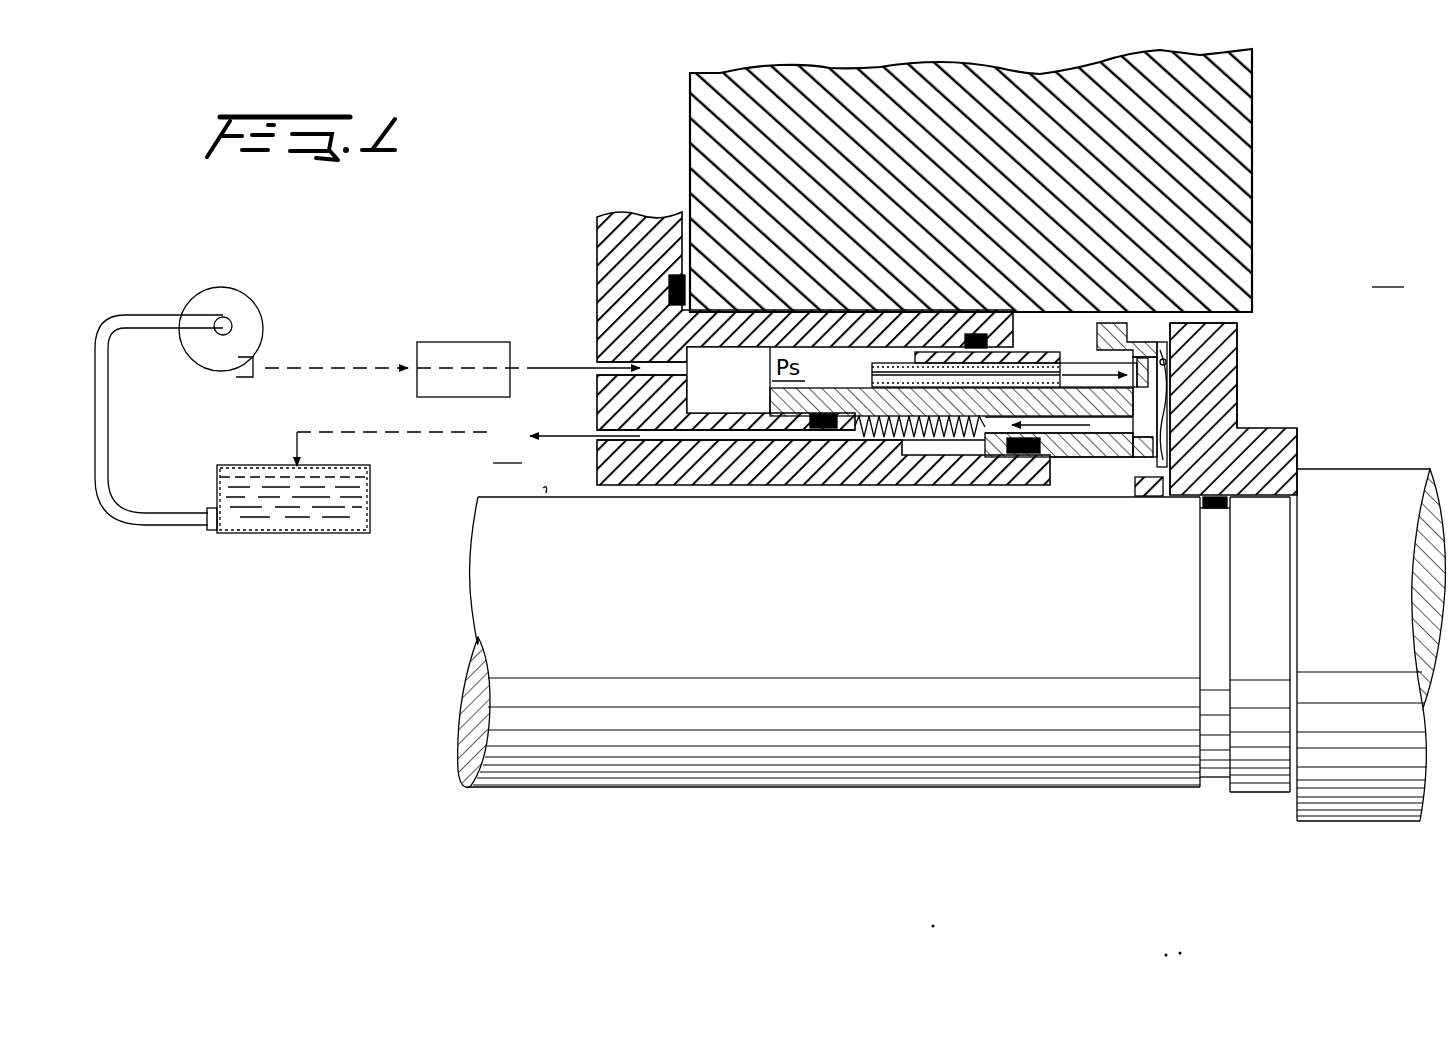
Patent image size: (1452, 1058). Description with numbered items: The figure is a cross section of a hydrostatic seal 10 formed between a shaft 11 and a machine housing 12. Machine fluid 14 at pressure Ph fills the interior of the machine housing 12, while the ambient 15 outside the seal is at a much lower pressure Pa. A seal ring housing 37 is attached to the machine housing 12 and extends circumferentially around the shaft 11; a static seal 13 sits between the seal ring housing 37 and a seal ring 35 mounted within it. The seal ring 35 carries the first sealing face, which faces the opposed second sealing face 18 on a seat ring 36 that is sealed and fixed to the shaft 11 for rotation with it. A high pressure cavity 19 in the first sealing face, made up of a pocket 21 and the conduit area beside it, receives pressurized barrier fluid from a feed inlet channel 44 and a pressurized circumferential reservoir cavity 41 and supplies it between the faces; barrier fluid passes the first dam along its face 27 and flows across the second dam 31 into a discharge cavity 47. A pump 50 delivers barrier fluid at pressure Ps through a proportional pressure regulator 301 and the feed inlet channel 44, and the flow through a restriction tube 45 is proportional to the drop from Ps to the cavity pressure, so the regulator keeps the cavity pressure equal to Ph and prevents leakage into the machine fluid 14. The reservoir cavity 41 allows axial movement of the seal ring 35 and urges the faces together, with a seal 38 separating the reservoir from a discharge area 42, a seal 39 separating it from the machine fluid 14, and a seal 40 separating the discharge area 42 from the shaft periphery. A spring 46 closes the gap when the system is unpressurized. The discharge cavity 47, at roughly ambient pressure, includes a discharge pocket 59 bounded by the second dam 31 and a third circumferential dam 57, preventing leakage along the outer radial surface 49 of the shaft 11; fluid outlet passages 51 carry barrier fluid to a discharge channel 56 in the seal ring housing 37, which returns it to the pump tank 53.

The hydrostatic seal 10 is at (612, 182).
The shaft 11 is at (700, 772).
The machine housing 12 is at (1235, 83).
The static seal 13 is at (669, 287).
The machine fluid 14 is at (1345, 287).
The ambient 15 is at (466, 463).
The second sealing face 18 is at (1160, 350).
The high pressure cavity 19 is at (1153, 328).
The pocket 21 is at (1175, 378).
The face of first dam 27 is at (1237, 325).
The second dam 31 is at (1237, 388).
The seal ring 35 is at (1112, 325).
The seat ring 36 is at (1237, 422).
The seal ring housing 37 is at (620, 250).
The seal 38 is at (843, 410).
The seal 39 is at (975, 338).
The seal 40 is at (1022, 455).
The pressurized circumferential reservoir cavity 41 is at (728, 362).
The discharge area 42 is at (922, 443).
The feed inlet channel 44 is at (630, 362).
The restriction tube 45 is at (900, 363).
The spring 46 is at (956, 438).
The discharge cavity 47 is at (1140, 422).
The outer radial surface 49 is at (543, 488).
The pump 50 is at (222, 292).
The fluid outlet passages 51 is at (1080, 432).
The pump tank 53 is at (287, 513).
The discharge channel 56 is at (628, 430).
The third circumferential dam 57 is at (1157, 420).
The discharge pocket 59 is at (1297, 438).
The proportional pressure regulator 301 is at (440, 342).